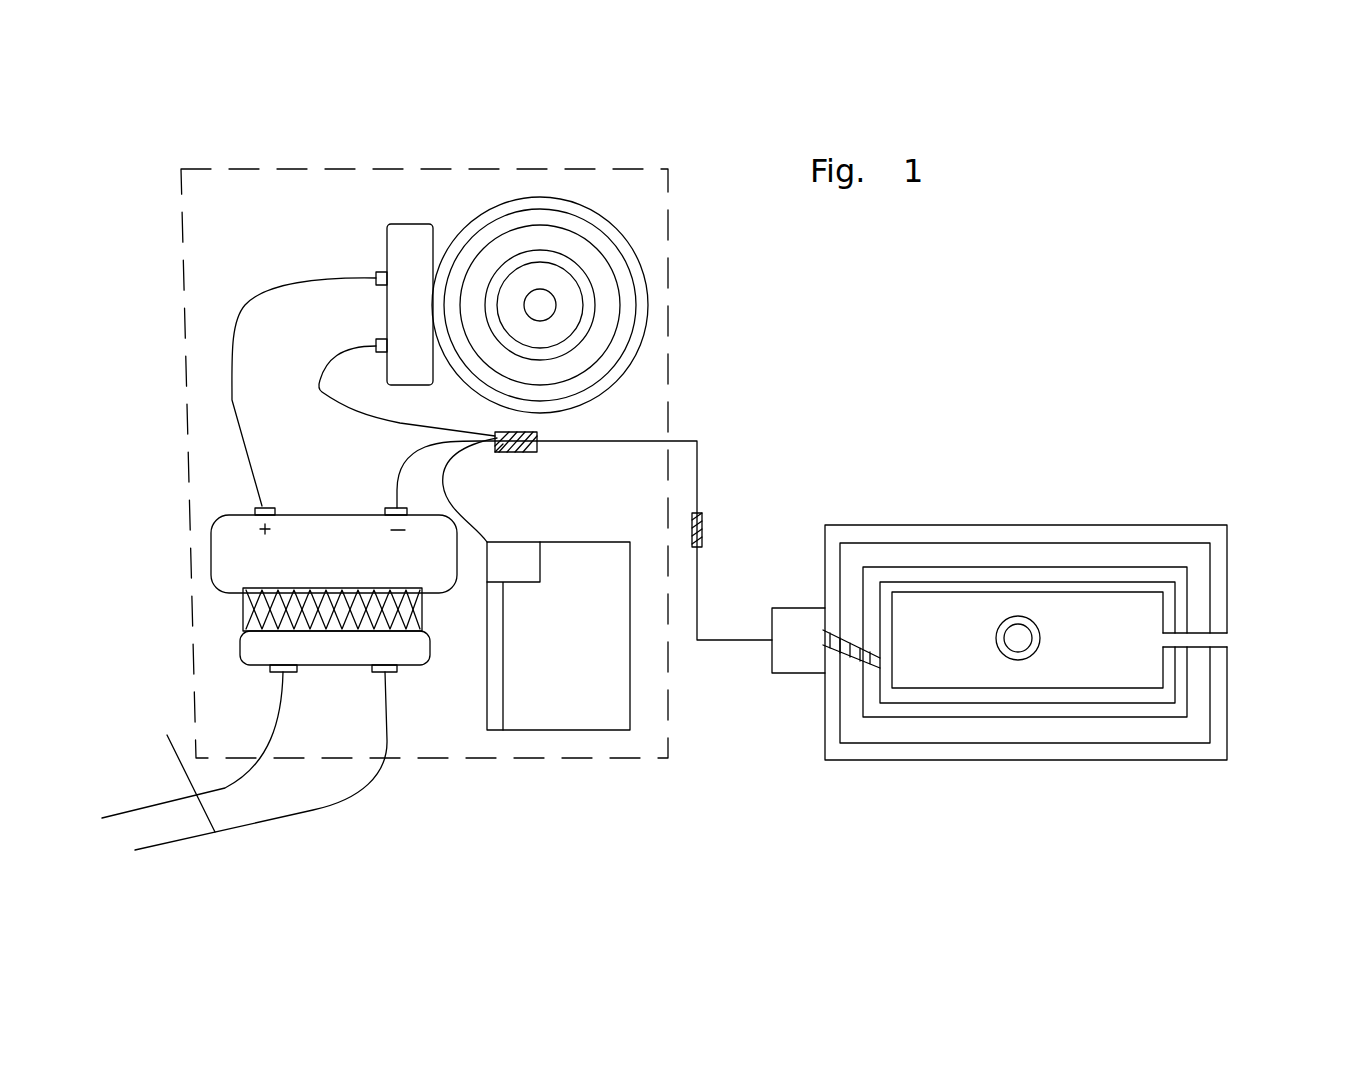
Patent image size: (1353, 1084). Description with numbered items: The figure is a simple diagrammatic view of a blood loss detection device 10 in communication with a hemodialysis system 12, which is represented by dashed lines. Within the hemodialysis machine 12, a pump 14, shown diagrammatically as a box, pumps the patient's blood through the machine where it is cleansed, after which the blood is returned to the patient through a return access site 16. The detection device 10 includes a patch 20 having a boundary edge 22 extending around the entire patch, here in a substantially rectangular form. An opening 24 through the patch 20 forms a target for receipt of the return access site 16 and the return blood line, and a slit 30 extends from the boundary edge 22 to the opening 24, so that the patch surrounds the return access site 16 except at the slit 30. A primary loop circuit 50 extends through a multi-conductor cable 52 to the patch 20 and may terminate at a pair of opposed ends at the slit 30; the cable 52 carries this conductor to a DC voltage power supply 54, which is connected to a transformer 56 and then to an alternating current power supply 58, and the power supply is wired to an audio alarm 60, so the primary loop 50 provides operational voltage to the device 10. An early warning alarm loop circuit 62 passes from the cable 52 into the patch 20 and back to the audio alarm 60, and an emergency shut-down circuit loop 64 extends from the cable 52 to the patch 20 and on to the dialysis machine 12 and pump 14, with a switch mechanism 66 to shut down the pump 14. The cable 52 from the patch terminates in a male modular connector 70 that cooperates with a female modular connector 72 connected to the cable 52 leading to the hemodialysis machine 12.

The blood loss detection device 10 is at (1008, 455).
The hemodialysis system 12 is at (422, 170).
The pump 14 is at (560, 730).
The return access site 16 is at (1020, 618).
The patch 20 is at (825, 675).
The boundary edge 22 is at (1023, 760).
The opening 24 is at (1107, 587).
The slit 30 is at (1228, 640).
The primary loop circuit 50 is at (400, 463).
The multi-conductor cable 52 is at (718, 628).
The DC voltage power supply 54 is at (334, 550).
The transformer 56 is at (335, 630).
The alternating current power supply 58 is at (213, 787).
The audio alarm 60 is at (657, 303).
The early warning alarm loop circuit 62 is at (320, 388).
The emergency shut-down circuit loop 64 is at (458, 507).
The switch mechanism 66 is at (505, 730).
The male modular connector 70 is at (706, 545).
The female modular connector 72 is at (700, 528).